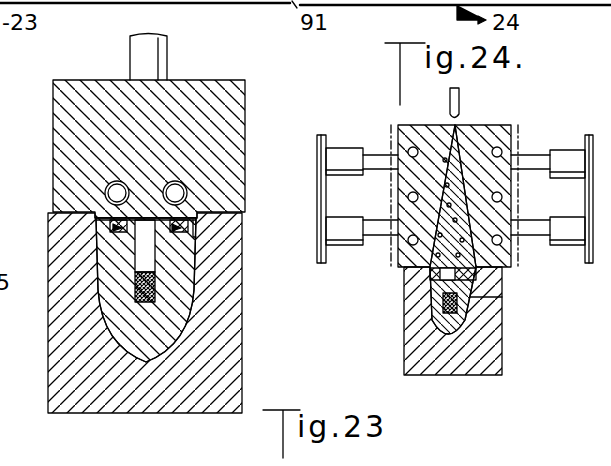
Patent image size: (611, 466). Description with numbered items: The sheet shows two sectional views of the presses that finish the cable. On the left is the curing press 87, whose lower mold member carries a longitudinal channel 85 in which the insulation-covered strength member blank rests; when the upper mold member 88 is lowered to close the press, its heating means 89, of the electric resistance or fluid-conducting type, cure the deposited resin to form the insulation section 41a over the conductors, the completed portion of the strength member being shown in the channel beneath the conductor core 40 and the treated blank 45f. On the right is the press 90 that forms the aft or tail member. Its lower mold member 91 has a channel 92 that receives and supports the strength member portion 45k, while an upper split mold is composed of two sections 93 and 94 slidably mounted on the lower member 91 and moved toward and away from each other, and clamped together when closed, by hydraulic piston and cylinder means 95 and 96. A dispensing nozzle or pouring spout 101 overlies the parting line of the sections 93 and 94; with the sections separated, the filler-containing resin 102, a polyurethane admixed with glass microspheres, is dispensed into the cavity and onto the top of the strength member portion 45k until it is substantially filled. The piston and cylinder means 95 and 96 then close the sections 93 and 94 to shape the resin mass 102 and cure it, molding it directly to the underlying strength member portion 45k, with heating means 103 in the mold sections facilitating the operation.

In FIG. 23, the upper mold member 88 is at (53, 128).
In FIG. 23, the curing press 87 is at (35, 212).
In FIG. 23, the heating means 89 is at (168, 182).
In FIG. 23, the longitudinal channel 85 is at (200, 251).
In FIG. 23, the insulation section 41a is at (165, 262).
In FIG. 23, the core element 40 is at (160, 297).
In FIG. 23, the molded article 45f is at (132, 304).
In FIG. 24, the mold section 93 is at (492, 125).
In FIG. 24, the lower mold member 91 is at (416, 325).
In FIG. 24, the mold section 94 is at (440, 150).
In FIG. 24, the channel 92 is at (502, 298).
In FIG. 24, the strength member portion 45k is at (460, 333).
In FIG. 24, the heating means 103 is at (407, 198).
In FIG. 24, the filler-containing resin 102 is at (465, 222).
In FIG. 24, the piston and cylinder means 96 is at (365, 150).
In FIG. 24, the piston and cylinder means 95 is at (550, 152).
In FIG. 24, the dispensing nozzle 101 is at (462, 98).
In FIG. 24, the press 90 is at (382, 260).